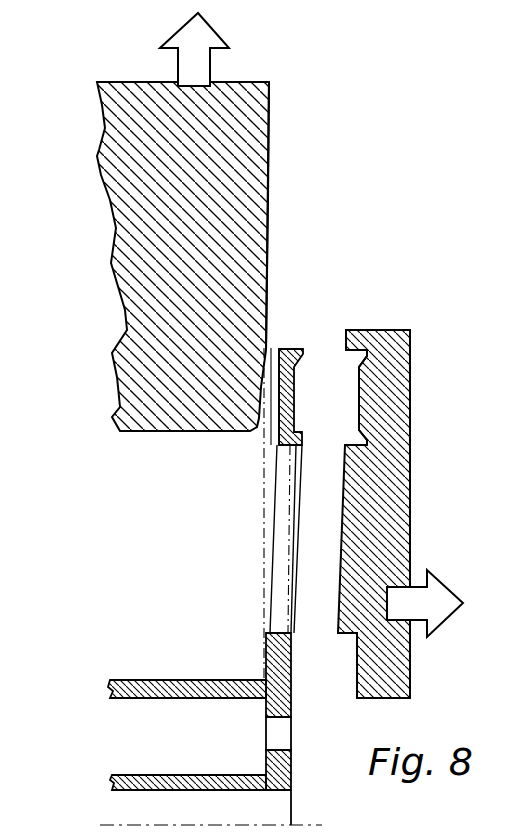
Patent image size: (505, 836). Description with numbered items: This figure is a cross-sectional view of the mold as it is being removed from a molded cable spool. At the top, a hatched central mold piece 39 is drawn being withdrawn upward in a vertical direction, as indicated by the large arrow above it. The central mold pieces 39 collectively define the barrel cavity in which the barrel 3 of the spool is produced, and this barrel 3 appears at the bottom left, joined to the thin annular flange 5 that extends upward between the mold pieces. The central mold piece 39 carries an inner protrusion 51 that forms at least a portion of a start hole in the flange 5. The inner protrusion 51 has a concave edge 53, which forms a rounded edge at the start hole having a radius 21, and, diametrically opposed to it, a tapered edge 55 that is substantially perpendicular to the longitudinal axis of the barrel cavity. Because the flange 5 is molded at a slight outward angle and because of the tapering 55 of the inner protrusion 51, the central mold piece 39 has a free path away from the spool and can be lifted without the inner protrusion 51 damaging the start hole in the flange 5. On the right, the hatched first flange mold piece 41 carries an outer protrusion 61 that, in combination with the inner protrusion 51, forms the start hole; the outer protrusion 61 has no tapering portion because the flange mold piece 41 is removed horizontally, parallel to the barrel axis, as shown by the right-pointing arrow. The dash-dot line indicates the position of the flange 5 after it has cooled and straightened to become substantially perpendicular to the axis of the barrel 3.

The central mold piece 39 is at (126, 64).
The tapered edge 55 is at (270, 148).
The inner protrusion 51 is at (268, 252).
The annular flange 5 is at (307, 322).
The concave edge 53 is at (261, 387).
The outer protrusion 61 is at (346, 453).
The first flange mold piece 41 is at (430, 350).
The radius 21 is at (268, 630).
The barrel 3 is at (153, 680).